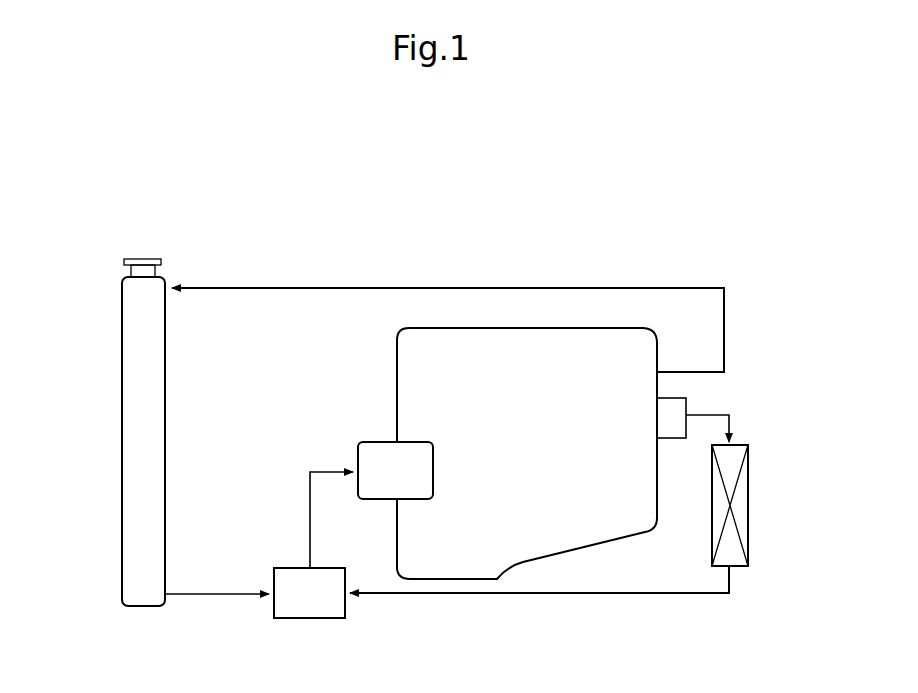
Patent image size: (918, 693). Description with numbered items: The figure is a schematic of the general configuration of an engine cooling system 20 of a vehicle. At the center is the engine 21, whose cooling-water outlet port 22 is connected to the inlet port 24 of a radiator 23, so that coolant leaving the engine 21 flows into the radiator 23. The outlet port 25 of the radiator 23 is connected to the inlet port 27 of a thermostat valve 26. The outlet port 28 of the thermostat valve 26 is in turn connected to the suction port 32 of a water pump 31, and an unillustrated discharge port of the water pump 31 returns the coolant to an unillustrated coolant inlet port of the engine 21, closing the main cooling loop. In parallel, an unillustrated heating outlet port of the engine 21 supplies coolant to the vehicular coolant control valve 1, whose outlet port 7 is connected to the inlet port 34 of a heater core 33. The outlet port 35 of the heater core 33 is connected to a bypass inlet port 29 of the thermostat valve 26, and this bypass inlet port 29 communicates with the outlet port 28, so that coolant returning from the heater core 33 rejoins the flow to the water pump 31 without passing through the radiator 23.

The vehicular coolant control valve 1 is at (676, 440).
The outlet port 7 is at (688, 412).
The engine cooling system 20 is at (778, 307).
The engine 21 is at (403, 368).
The outlet port 22 is at (657, 371).
The radiator 23 is at (122, 413).
The inlet port 24 is at (166, 285).
The outlet port 25 is at (168, 592).
The thermostat valve 26 is at (328, 568).
The inlet port 27 is at (272, 590).
The outlet port 28 is at (307, 567).
The bypass inlet port 29 is at (348, 600).
The water pump 31 is at (380, 446).
The suction port 32 is at (356, 468).
The heater core 33 is at (740, 503).
The inlet port 34 is at (735, 442).
The outlet port 35 is at (733, 570).